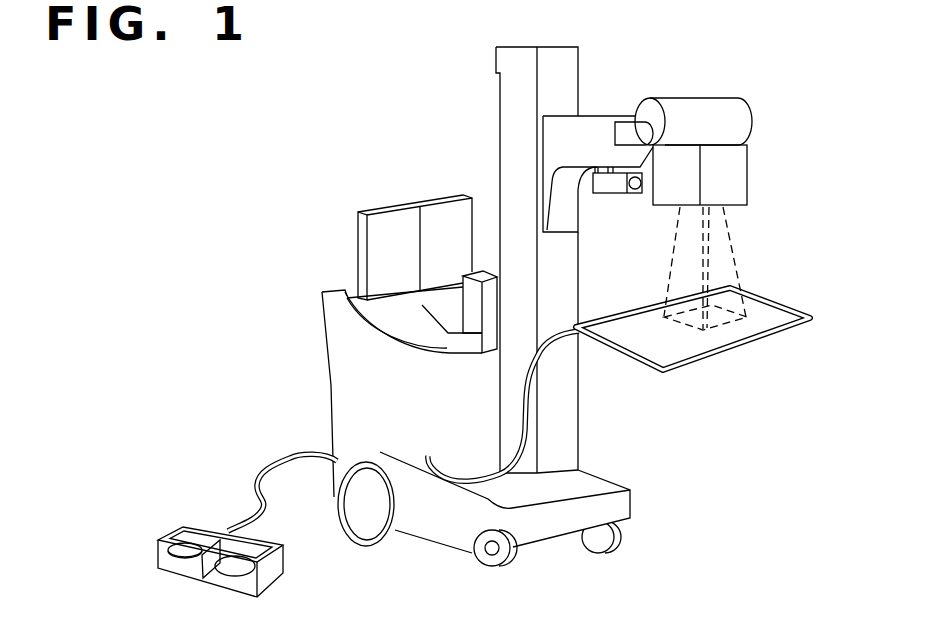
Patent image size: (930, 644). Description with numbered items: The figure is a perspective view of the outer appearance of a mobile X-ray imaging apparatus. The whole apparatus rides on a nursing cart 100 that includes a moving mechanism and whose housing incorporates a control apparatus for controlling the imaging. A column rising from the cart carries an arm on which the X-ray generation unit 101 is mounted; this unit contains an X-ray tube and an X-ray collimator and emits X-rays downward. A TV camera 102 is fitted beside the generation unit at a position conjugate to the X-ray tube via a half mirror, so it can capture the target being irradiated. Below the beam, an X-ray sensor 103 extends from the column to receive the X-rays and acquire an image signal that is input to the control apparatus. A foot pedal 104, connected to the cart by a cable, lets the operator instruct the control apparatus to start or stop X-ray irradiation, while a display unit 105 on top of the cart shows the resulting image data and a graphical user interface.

The nursing cart 100 is at (342, 370).
The X-ray generation unit 101 is at (735, 173).
The TV camera 102 is at (612, 193).
The X-ray sensor 103 is at (727, 352).
The foot pedal 104 is at (198, 533).
The display unit 105 is at (393, 218).